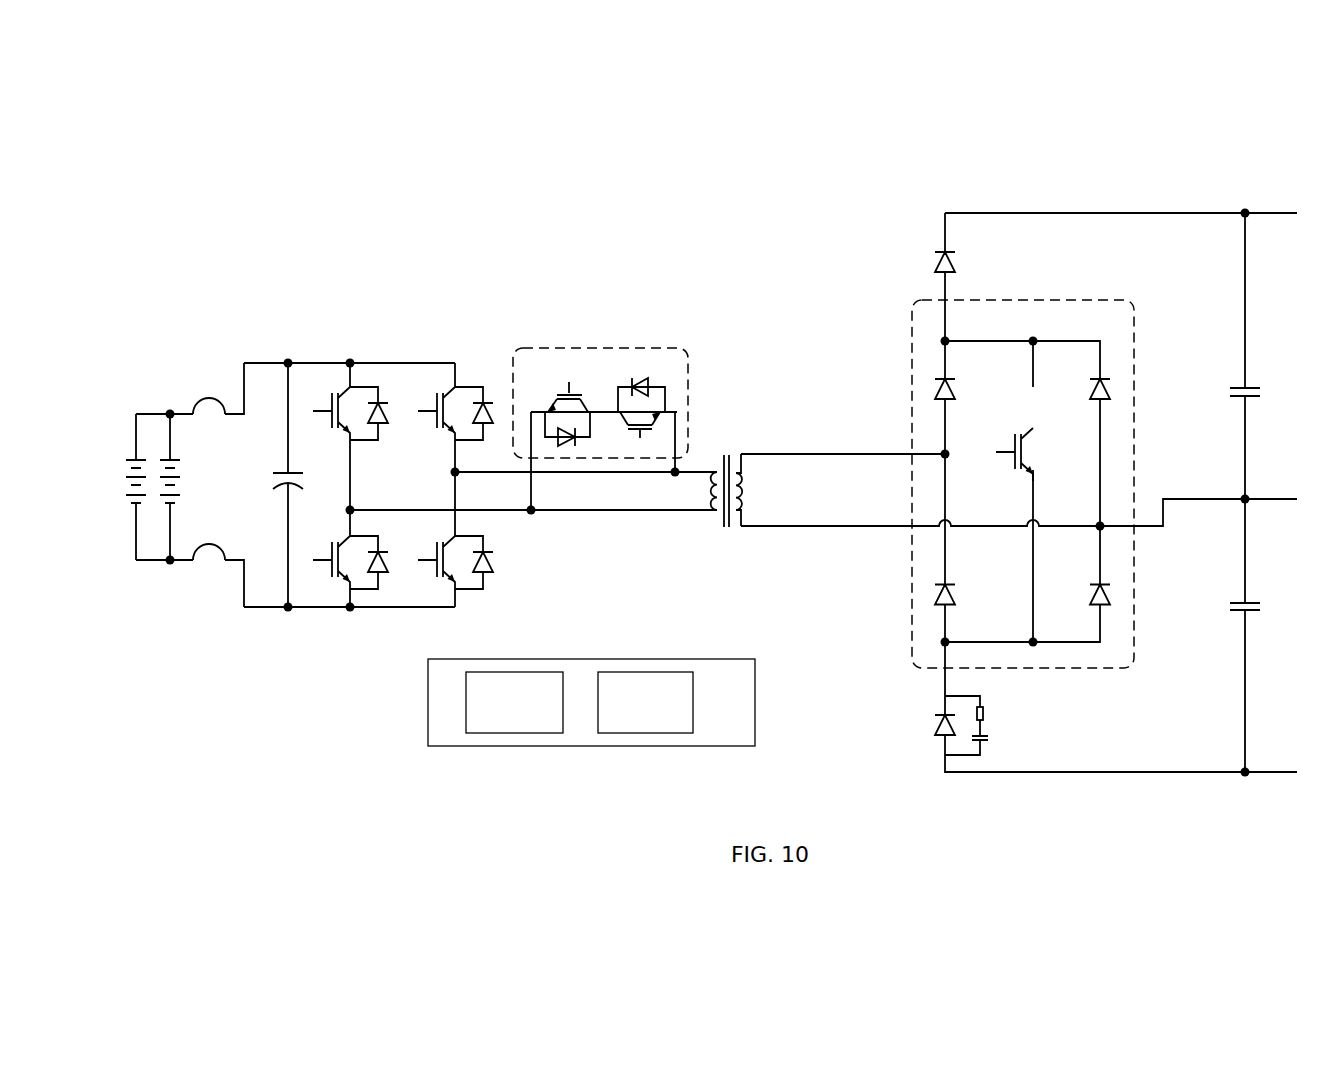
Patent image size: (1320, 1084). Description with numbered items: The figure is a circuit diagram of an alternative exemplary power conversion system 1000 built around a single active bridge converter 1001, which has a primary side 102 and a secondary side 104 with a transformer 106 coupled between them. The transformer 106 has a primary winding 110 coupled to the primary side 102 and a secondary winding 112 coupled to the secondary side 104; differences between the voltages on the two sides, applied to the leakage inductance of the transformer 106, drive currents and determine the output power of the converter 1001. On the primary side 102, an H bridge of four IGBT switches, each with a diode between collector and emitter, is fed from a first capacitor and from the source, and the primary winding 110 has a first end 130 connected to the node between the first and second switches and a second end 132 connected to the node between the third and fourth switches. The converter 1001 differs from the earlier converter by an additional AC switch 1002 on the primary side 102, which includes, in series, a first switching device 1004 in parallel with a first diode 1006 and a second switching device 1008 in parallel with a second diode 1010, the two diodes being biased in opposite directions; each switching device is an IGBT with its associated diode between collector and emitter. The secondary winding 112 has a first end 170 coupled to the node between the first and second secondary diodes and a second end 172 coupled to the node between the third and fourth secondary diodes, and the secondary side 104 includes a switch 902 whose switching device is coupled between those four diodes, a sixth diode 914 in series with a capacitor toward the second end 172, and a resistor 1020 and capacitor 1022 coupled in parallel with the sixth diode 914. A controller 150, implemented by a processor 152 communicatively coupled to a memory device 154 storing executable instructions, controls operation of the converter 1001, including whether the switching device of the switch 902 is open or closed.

The power conversion system 1000 is at (766, 177).
The single active bridge converter 1001 is at (729, 325).
The primary side 102 is at (312, 360).
The secondary side 104 is at (1167, 212).
The transformer 106 is at (758, 483).
The primary winding 110 is at (710, 505).
The secondary winding 112 is at (747, 482).
The first end 130 is at (698, 468).
The second end 132 is at (568, 512).
The controller 150 is at (591, 673).
The processor 152 is at (514, 702).
The memory device 154 is at (645, 702).
The first end 170 is at (833, 452).
The second end 172 is at (787, 528).
The switch 902 is at (1060, 300).
The sixth diode 914 is at (933, 718).
The AC switch 1002 is at (600, 392).
The first switching device 1004 is at (583, 397).
The first diode 1006 is at (587, 447).
The second switching device 1008 is at (652, 440).
The second diode 1010 is at (645, 380).
The resistor 1020 is at (987, 712).
The capacitor 1022 is at (990, 733).